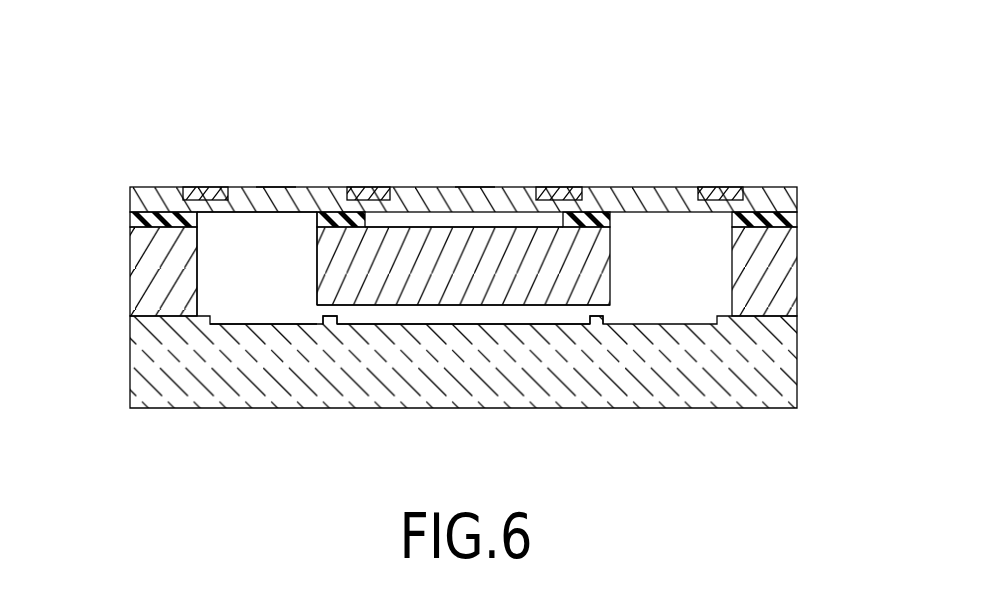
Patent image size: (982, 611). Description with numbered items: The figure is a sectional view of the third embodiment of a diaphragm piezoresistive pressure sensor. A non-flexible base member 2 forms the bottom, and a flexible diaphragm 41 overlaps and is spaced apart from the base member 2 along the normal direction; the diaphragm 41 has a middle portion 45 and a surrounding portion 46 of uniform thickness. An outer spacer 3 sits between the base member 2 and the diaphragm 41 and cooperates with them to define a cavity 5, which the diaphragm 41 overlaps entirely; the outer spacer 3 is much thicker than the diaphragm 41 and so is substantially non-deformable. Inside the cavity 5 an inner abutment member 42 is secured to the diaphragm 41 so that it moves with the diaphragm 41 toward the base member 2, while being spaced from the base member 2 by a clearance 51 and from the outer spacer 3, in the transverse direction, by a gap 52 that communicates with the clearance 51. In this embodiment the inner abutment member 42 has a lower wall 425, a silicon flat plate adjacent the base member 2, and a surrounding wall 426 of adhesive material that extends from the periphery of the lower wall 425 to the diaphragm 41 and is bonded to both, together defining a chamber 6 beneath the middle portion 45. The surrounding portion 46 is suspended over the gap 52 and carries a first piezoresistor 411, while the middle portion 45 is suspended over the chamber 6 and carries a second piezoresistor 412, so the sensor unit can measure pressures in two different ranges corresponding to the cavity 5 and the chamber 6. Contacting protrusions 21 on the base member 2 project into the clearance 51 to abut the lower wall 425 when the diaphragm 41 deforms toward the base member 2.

The base member 2 is at (692, 395).
The contacting protrusions 21 is at (330, 322).
The outer spacer 3 is at (140, 268).
The cavity 5 is at (230, 282).
The clearance 51 is at (500, 307).
The gap 52 is at (267, 277).
The chamber 6 is at (434, 222).
The diaphragm 41 is at (640, 184).
The first piezoresistor 411 is at (205, 190).
The second piezoresistor 412 is at (363, 190).
The inner abutment member 42 is at (612, 268).
The lower wall 425 is at (443, 305).
The surrounding wall 426 is at (317, 215).
The middle portion 45 is at (475, 187).
The surrounding portion 46 is at (276, 187).